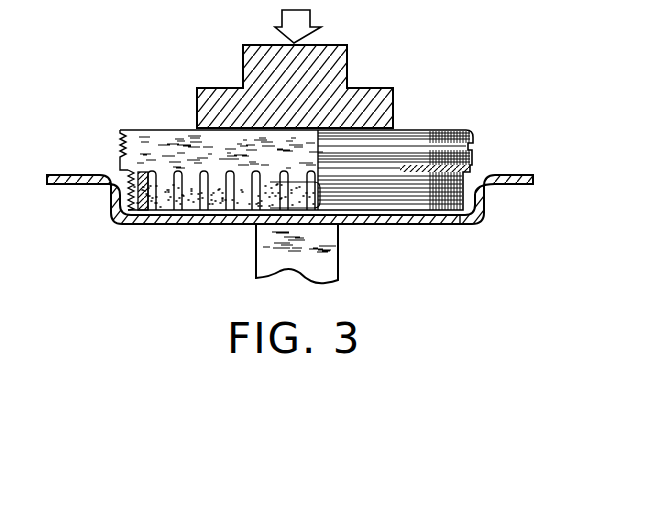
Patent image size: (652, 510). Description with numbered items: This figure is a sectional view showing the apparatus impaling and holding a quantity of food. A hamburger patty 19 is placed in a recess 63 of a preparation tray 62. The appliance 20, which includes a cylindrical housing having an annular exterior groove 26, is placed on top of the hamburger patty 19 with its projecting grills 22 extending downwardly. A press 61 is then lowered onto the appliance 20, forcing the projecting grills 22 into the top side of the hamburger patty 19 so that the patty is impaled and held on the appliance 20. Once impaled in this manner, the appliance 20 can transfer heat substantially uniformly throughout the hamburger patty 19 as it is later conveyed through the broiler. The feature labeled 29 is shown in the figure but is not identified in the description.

The hamburger patty 19 is at (203, 222).
The appliance 20 is at (480, 143).
The projecting grills 22 is at (155, 220).
The annular exterior groove 26 is at (120, 148).
The slot 29 is at (172, 222).
The press 61 is at (347, 68).
The preparation tray 62 is at (518, 183).
The recess 63 is at (460, 224).